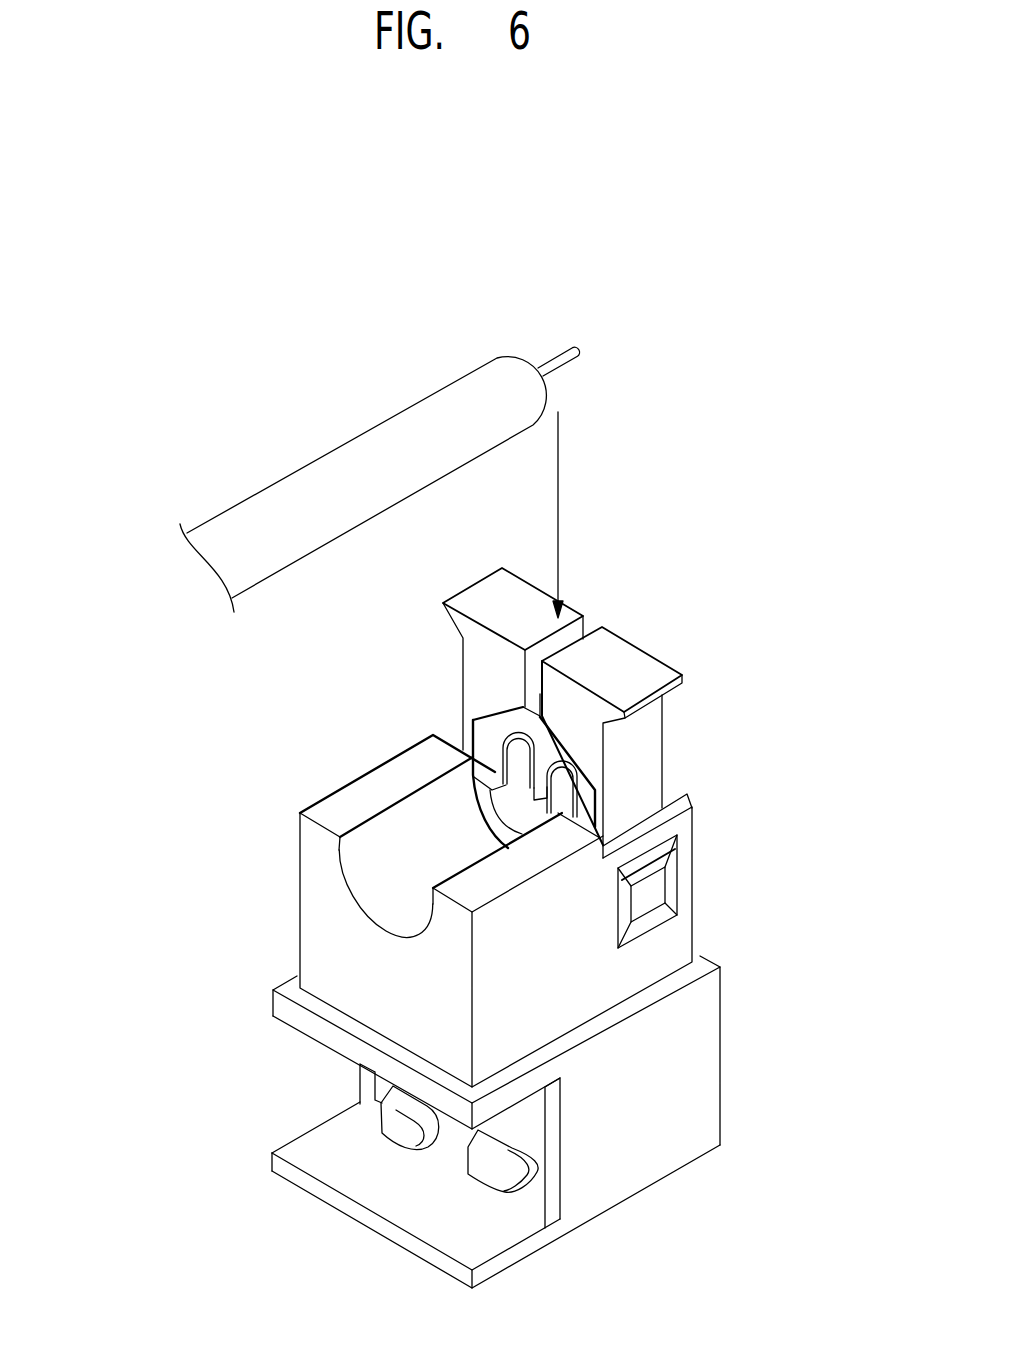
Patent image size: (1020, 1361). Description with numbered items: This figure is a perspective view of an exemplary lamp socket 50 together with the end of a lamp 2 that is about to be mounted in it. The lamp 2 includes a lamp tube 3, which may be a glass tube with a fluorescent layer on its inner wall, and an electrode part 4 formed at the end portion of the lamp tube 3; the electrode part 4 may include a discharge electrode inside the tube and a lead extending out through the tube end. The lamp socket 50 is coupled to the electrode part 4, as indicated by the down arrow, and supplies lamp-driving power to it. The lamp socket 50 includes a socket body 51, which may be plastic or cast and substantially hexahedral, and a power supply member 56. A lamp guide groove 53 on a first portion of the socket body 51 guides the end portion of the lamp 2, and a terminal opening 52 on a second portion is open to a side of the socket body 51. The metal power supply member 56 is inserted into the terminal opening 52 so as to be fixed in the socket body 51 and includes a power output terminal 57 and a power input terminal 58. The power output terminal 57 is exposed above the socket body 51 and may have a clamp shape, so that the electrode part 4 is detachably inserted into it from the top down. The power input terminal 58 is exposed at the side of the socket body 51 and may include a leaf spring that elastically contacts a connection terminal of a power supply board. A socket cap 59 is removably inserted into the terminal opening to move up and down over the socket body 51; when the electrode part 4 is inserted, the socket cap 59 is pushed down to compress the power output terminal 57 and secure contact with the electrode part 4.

The lamp 2 is at (577, 263).
The lamp tube 3 is at (461, 393).
The electrode part 4 is at (570, 348).
The lamp socket 50 is at (499, 156).
The socket body 51 is at (710, 877).
The terminal opening 52 is at (470, 1150).
The lamp guide groove 53 is at (383, 879).
The power supply member 56 is at (152, 786).
The power output terminal 57 is at (473, 720).
The power input terminal 58 is at (388, 1118).
The socket cap 59 is at (643, 663).